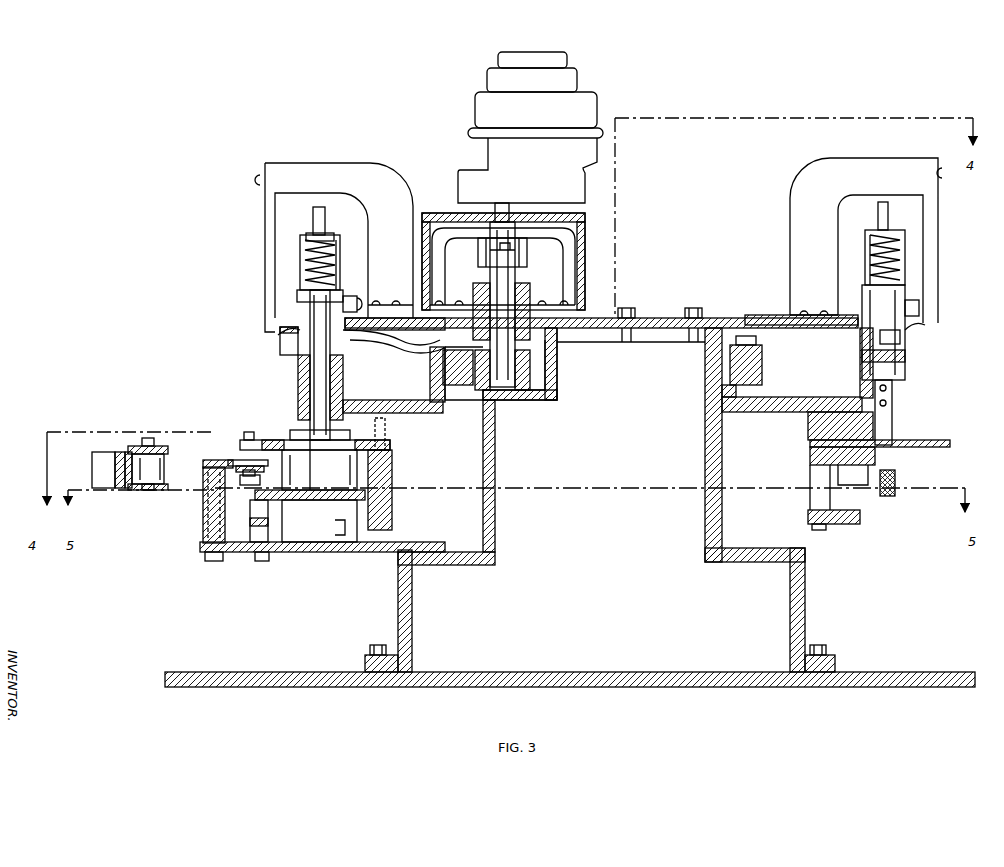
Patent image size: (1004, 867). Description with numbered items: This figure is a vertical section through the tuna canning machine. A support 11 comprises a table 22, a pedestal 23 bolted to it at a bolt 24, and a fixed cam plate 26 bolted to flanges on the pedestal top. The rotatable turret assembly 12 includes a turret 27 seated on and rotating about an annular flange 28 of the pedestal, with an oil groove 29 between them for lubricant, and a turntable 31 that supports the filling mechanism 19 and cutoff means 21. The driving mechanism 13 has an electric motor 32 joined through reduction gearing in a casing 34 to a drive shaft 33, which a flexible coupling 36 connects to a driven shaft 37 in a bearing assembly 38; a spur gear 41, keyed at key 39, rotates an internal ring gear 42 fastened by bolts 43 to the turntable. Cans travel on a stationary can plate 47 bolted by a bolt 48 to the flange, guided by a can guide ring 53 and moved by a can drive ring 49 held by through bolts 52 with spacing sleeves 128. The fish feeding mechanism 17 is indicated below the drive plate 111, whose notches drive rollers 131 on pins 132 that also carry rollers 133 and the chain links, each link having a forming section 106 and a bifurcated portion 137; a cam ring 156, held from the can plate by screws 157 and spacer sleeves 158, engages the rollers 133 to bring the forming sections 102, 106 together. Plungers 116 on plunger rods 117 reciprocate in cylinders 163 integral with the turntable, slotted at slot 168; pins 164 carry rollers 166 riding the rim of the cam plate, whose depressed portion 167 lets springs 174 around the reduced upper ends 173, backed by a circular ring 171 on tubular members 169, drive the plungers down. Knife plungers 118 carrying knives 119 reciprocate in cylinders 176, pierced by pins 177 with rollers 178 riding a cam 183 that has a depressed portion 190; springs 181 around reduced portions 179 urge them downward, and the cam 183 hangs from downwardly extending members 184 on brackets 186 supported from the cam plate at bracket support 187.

The support 11 is at (413, 668).
The rotatable turret assembly 12 is at (483, 440).
The driving mechanism 13 is at (548, 272).
The fish feeding mechanism 17 is at (345, 560).
The mechanism for filling the containers with fish 19 is at (300, 428).
The cutoff means 21 is at (855, 372).
The table 22 is at (535, 672).
The pedestal 23 is at (495, 560).
The bolt 24 is at (375, 652).
The fixed cam plate 26 is at (650, 330).
The turret 27 is at (505, 488).
The annular flange 28 is at (465, 565).
The oil groove 29 is at (496, 440).
The turntable 31 is at (360, 400).
The electric motor 32 is at (584, 100).
The drive shaft 33 is at (500, 222).
The casing 34 is at (585, 158).
The flexible coupling 36 is at (521, 252).
The driven shaft 37 is at (503, 315).
The bearing assembly 38 is at (476, 300).
The key 39 is at (530, 400).
The spur gear 41 is at (552, 381).
The internal ring gear 42 is at (443, 361).
The bolts 43 is at (755, 348).
The stationary can plate 47 is at (268, 562).
The bolt 48 is at (430, 565).
The can drive ring 49 is at (356, 555).
The through bolts 52 is at (382, 418).
The can guide ring 53 is at (252, 527).
The forming section 102 is at (345, 474).
The forming section 106 is at (290, 500).
The drive plate 111 is at (270, 442).
The plungers 116 is at (335, 443).
The plunger rods 117 is at (300, 369).
The plungers 118 is at (905, 306).
The knives 119 is at (876, 423).
The spacing sleeves 128 is at (392, 493).
The rollers 131 is at (240, 442).
The pins 132 is at (249, 432).
The rollers 133 is at (248, 485).
The bifurcated portion 137 is at (128, 450).
The cam ring 156 is at (222, 460).
The screws 157 is at (210, 562).
The spacer sleeves 158 is at (205, 525).
The cylinders 163 is at (348, 380).
The pins 164 is at (340, 298).
The rollers 166 is at (358, 300).
The depressed portion 167 is at (410, 350).
The slot 168 is at (300, 322).
The tubular members 169 is at (338, 262).
The circular ring 171 is at (328, 240).
The decreased-diameter upper end 173 is at (316, 218).
The springs 174 is at (300, 252).
The cylinders 176 is at (905, 356).
The pins 177 is at (865, 305).
The rollers 178 is at (912, 300).
The decreased-diameter portion 179 is at (889, 222).
The springs 181 is at (874, 245).
The cam 183 is at (290, 326).
The downwardly extending members 184 is at (938, 268).
The brackets 186 is at (880, 180).
The bracket support 187 is at (804, 305).
The depressed portion 190 is at (290, 335).